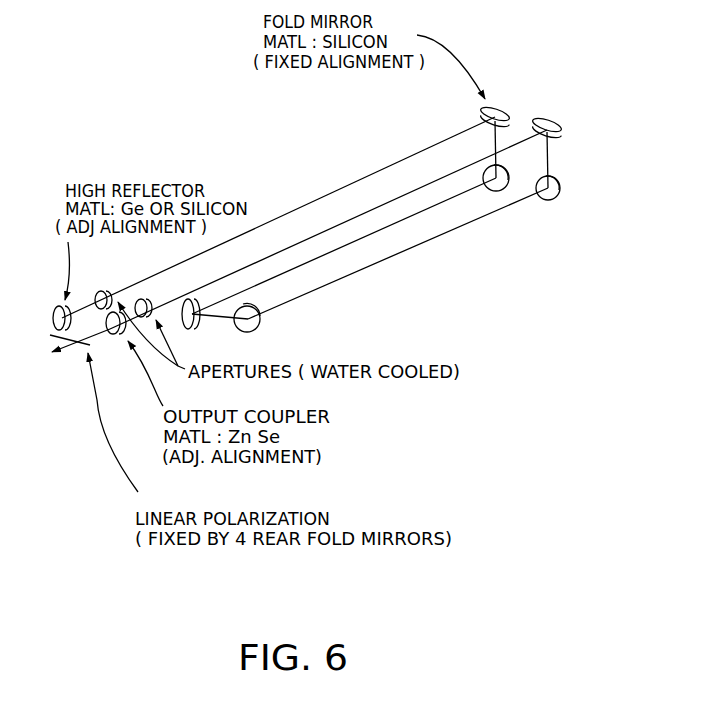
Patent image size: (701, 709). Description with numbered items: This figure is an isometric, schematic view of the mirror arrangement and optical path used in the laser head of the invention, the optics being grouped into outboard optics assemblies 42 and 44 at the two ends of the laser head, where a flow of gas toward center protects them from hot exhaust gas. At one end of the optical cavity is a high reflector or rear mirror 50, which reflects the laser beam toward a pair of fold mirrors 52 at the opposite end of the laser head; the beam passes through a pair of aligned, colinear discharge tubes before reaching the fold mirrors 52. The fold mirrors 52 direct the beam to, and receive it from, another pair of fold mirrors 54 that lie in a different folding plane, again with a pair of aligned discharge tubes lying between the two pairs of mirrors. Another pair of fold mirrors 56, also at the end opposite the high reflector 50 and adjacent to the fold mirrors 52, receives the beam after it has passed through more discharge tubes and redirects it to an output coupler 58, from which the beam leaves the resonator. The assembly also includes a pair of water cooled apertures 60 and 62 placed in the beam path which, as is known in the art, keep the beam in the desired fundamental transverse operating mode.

The outboard optics assembly 42 is at (43, 294).
The outboard optics assembly 44 is at (515, 98).
The high reflector 50 is at (52, 318).
The fold mirrors 52 is at (485, 116).
The fold mirrors 54 is at (194, 322).
The fold mirrors 56 is at (562, 128).
The output coupler 58 is at (112, 334).
The water cooled aperture 60 is at (101, 291).
The water cooled aperture 62 is at (143, 299).